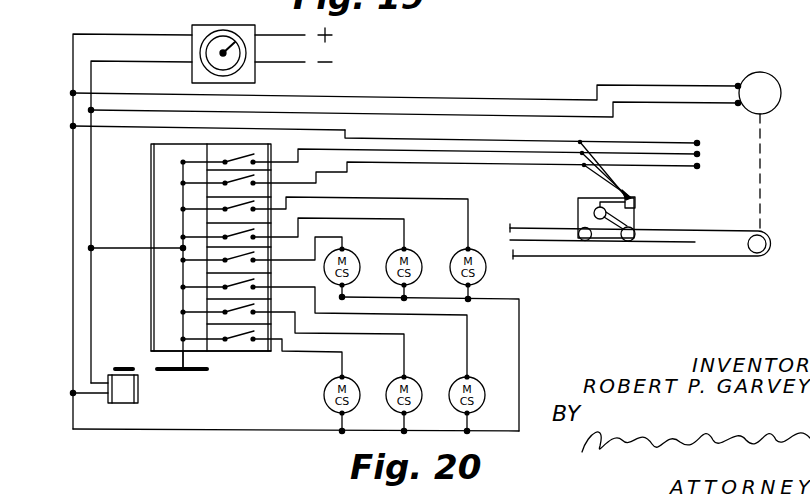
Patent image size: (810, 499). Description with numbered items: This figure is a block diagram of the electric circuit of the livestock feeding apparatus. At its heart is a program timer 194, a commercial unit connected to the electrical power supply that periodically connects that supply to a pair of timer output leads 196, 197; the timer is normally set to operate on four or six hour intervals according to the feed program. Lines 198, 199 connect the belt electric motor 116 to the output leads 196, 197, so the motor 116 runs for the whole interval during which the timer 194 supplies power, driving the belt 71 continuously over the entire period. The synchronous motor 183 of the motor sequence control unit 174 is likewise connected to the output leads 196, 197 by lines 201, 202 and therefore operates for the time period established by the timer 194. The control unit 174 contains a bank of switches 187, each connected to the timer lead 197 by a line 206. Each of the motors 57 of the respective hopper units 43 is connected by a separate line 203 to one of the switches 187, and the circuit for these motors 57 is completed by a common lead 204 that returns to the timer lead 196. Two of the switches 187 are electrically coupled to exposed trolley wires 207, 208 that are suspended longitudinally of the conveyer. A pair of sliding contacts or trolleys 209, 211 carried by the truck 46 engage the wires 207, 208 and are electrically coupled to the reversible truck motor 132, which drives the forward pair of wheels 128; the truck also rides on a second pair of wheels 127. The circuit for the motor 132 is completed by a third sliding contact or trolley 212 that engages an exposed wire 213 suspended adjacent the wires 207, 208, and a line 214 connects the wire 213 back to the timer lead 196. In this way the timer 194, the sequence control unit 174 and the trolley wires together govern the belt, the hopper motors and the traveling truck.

The timer output lead 196 is at (73, 46).
The timer output lead 197 is at (125, 62).
The program timer 194 is at (231, 27).
The line 198 is at (424, 97).
The line 199 is at (492, 115).
The belt electric motor 116 is at (766, 71).
The line 214 is at (284, 128).
The exposed wire 213 is at (400, 138).
The exposed trolley wire 207 is at (470, 150).
The exposed trolley wire 208 is at (418, 164).
The motor sequence control unit 174 is at (150, 175).
The line 206 is at (122, 247).
The line 201 is at (92, 382).
The line 202 is at (92, 397).
The synchronous motor 183 is at (140, 397).
The switch 187 is at (247, 352).
The line 203 is at (469, 358).
The hopper unit 43 is at (373, 417).
The motor 57 is at (481, 401).
The common lead 204 is at (202, 431).
The sliding contact or trolley 209 is at (590, 168).
The sliding contact or trolley 211 is at (600, 182).
The sliding contact or trolley 212 is at (615, 170).
The truck 46 is at (638, 213).
The reversible electric motor 132 is at (579, 212).
The belt 71 is at (705, 257).
The wheel 127 is at (584, 242).
The wheel 128 is at (631, 242).